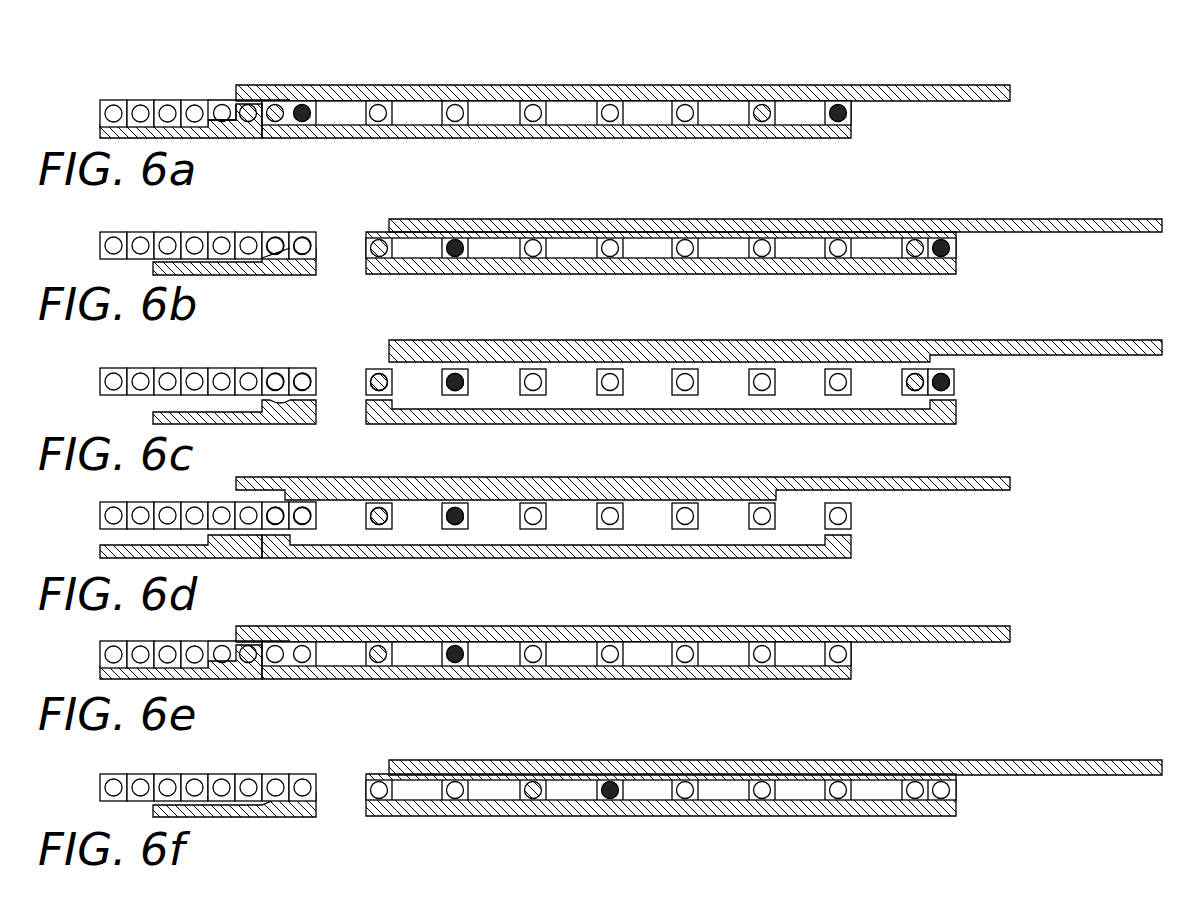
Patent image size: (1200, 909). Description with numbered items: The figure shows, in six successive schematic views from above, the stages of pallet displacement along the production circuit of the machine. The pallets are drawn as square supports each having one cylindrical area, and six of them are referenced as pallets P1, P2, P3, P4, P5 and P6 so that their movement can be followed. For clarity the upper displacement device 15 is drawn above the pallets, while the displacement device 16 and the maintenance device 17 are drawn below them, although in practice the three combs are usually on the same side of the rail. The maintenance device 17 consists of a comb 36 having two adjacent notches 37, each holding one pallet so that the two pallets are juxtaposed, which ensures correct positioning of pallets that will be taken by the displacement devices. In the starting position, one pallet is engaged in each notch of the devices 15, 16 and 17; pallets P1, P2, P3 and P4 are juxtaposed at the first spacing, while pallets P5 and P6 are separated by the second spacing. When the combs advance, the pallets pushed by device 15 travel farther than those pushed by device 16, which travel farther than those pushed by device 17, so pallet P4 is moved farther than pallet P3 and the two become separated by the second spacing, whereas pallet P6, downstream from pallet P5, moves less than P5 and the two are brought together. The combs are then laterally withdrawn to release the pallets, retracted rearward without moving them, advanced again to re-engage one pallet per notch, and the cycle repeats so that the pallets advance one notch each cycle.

In FIG. 6a, the displacement device 15 is at (975, 92).
In FIG. 6b, the displacement device 15 is at (1125, 228).
In FIG. 6c, the displacement device 15 is at (1125, 350).
In FIG. 6d, the displacement device 15 is at (970, 485).
In FIG. 6e, the displacement device 15 is at (970, 632).
In FIG. 6f, the displacement device 15 is at (1120, 768).
In FIG. 6a, the displacement device 16 is at (806, 138).
In FIG. 6b, the displacement device 16 is at (815, 274).
In FIG. 6c, the displacement device 16 is at (900, 422).
In FIG. 6d, the displacement device 16 is at (795, 558).
In FIG. 6e, the displacement device 16 is at (800, 681).
In FIG. 6f, the displacement device 16 is at (905, 816).
In FIG. 6a, the maintenance device 17 is at (250, 138).
In FIG. 6b, the maintenance device 17 is at (316, 270).
In FIG. 6c, the maintenance device 17 is at (305, 410).
In FIG. 6d, the maintenance device 17 is at (243, 558).
In FIG. 6e, the maintenance device 17 is at (243, 681).
In FIG. 6f, the maintenance device 17 is at (300, 800).
In FIG. 6a, the comb 36 is at (178, 136).
In FIG. 6a, the notches 37 is at (210, 120).
In FIG. 6b, the notches 37 is at (288, 262).
In FIG. 6a, the pallet P1 is at (222, 104).
In FIG. 6b, the pallet P1 is at (278, 236).
In FIG. 6c, the pallet P1 is at (278, 372).
In FIG. 6d, the pallet P1 is at (278, 506).
In FIG. 6e, the pallet P1 is at (278, 645).
In FIG. 6f, the pallet P1 is at (382, 782).
In FIG. 6a, the pallet P2 is at (258, 105).
In FIG. 6b, the pallet P2 is at (306, 236).
In FIG. 6c, the pallet P2 is at (306, 372).
In FIG. 6d, the pallet P2 is at (306, 506).
In FIG. 6e, the pallet P2 is at (306, 645).
In FIG. 6f, the pallet P2 is at (462, 782).
In FIG. 6a, the pallet P3 is at (284, 105).
In FIG. 6b, the pallet P3 is at (385, 240).
In FIG. 6c, the pallet P3 is at (385, 376).
In FIG. 6d, the pallet P3 is at (385, 510).
In FIG. 6e, the pallet P3 is at (385, 648).
In FIG. 6f, the pallet P3 is at (538, 782).
In FIG. 6a, the pallet P4 is at (308, 105).
In FIG. 6b, the pallet P4 is at (462, 240).
In FIG. 6c, the pallet P4 is at (462, 376).
In FIG. 6d, the pallet P4 is at (462, 510).
In FIG. 6e, the pallet P4 is at (462, 648).
In FIG. 6f, the pallet P4 is at (612, 782).
In FIG. 6a, the pallet P5 is at (762, 104).
In FIG. 6b, the pallet P5 is at (916, 240).
In FIG. 6c, the pallet P5 is at (916, 376).
In FIG. 6a, the pallet P6 is at (840, 104).
In FIG. 6b, the pallet P6 is at (946, 240).
In FIG. 6c, the pallet P6 is at (946, 376).